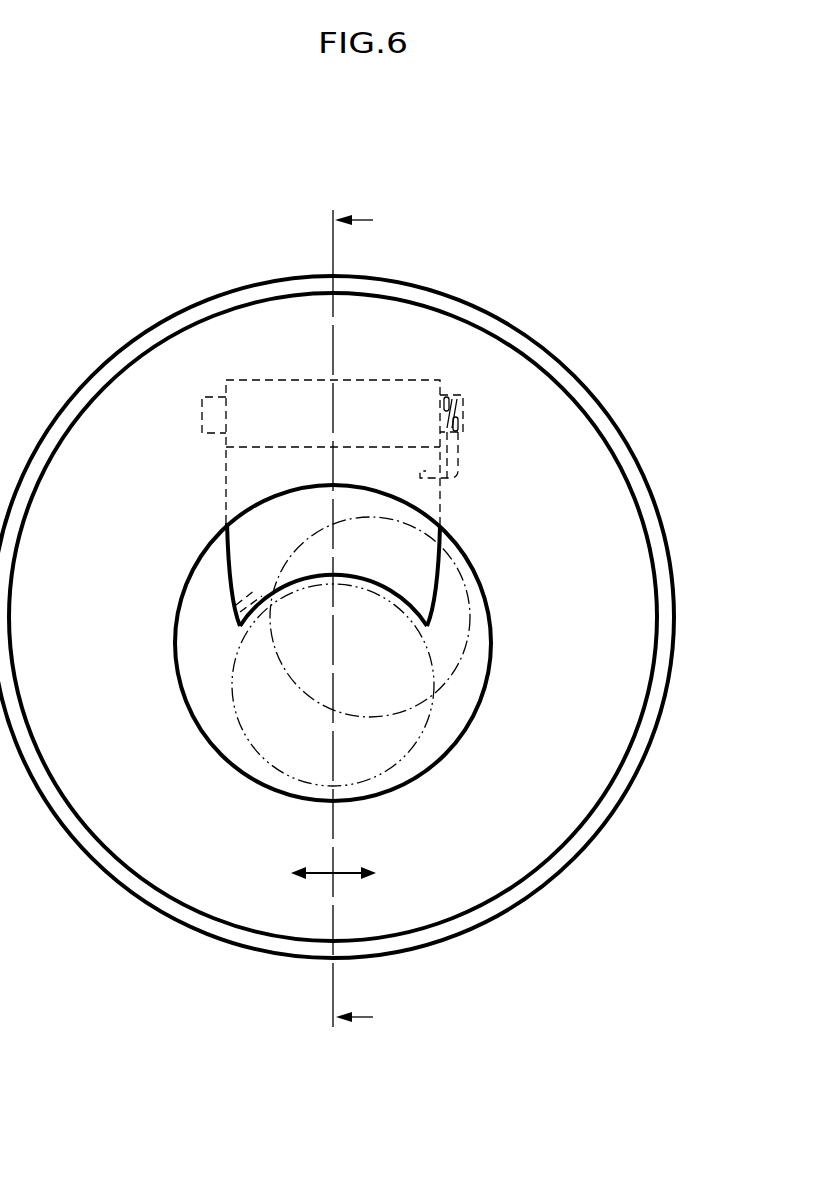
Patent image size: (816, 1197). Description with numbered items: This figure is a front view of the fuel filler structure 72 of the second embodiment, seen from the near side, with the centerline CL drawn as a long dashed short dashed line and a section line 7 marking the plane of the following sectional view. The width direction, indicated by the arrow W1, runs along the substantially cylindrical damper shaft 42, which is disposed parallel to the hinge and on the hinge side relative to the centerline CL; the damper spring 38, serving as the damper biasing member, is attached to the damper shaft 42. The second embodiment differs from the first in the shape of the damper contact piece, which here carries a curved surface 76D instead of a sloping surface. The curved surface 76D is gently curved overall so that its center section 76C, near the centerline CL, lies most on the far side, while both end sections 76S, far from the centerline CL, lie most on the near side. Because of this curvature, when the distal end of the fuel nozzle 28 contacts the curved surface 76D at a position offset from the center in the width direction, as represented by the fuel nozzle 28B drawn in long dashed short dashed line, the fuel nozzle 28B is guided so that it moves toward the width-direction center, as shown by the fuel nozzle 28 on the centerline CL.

The fuel filler structure 72 is at (488, 142).
The section line 7 is at (373, 220).
The centerline CL is at (330, 985).
The fuel nozzle 28B is at (485, 611).
The fuel nozzle 28 is at (432, 731).
The center section 76C is at (332, 506).
The end sections 76S is at (233, 565).
The curved surface 76D is at (262, 545).
The damper shaft 42 is at (217, 393).
The damper spring 38 is at (455, 393).
The width direction arrow W1 is at (330, 880).